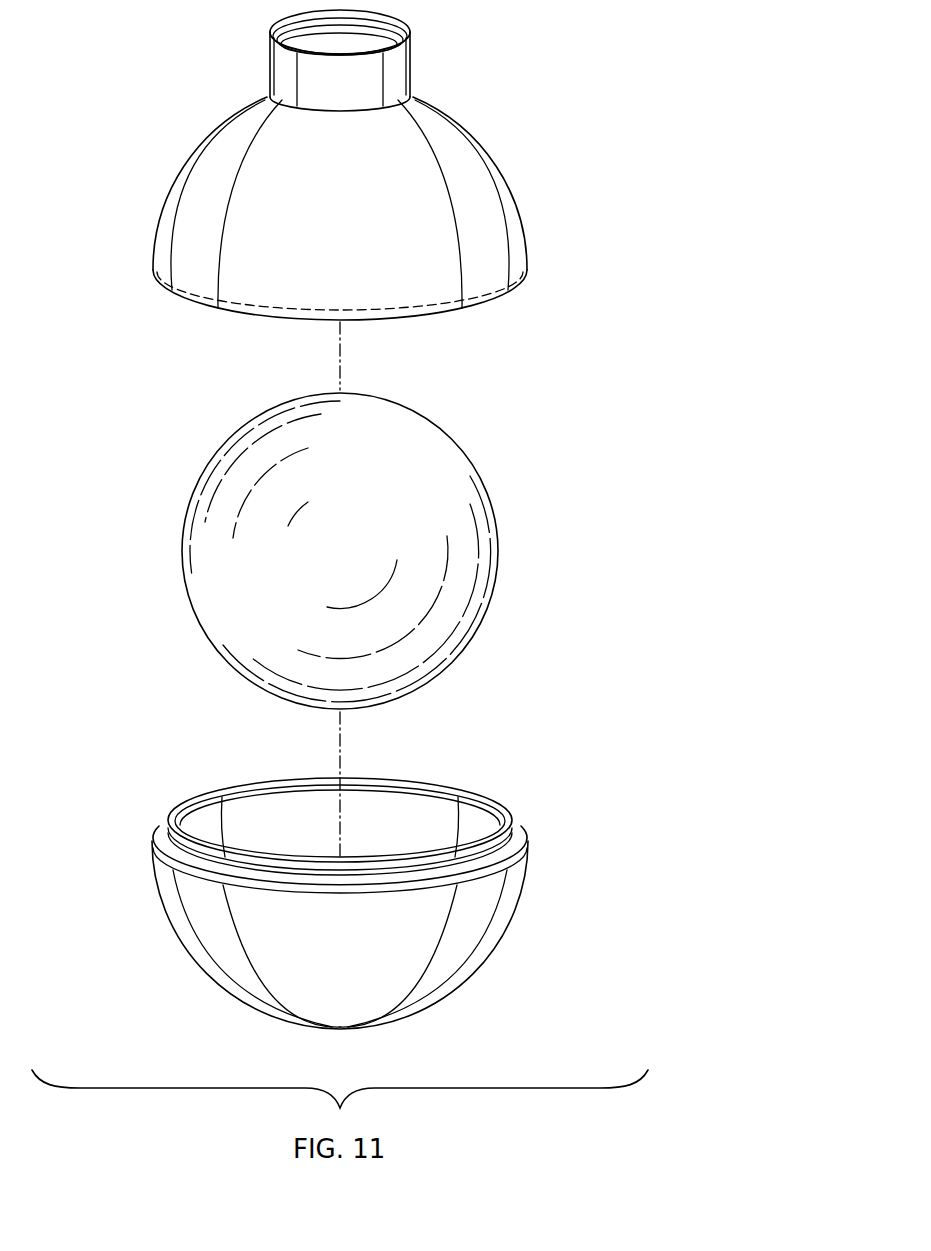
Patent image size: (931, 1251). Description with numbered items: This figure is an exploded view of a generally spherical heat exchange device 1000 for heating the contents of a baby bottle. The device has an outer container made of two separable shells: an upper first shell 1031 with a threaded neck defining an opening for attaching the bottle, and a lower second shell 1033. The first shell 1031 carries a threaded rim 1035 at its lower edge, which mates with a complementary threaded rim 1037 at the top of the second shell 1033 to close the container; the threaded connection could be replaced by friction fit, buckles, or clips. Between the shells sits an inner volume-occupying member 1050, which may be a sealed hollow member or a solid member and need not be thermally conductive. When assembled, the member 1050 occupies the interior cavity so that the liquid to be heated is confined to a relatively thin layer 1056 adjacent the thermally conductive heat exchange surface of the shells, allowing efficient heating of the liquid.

The heat exchange device 1000 is at (605, 53).
The first shell 1031 is at (166, 198).
The second shell 1033 is at (165, 905).
The threaded rim 1035 is at (155, 272).
The complementary threaded rim 1037 is at (172, 832).
The inner volume-occupying member 1050 is at (203, 530).
The relatively thin layer 1056 is at (506, 322).